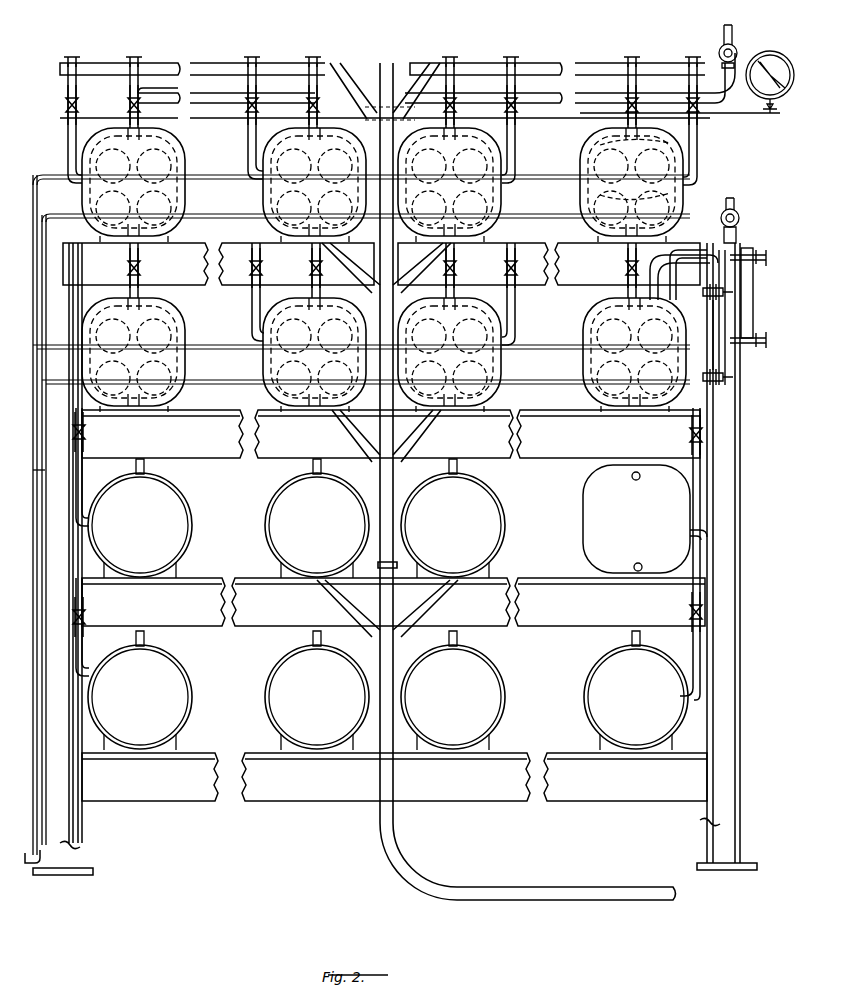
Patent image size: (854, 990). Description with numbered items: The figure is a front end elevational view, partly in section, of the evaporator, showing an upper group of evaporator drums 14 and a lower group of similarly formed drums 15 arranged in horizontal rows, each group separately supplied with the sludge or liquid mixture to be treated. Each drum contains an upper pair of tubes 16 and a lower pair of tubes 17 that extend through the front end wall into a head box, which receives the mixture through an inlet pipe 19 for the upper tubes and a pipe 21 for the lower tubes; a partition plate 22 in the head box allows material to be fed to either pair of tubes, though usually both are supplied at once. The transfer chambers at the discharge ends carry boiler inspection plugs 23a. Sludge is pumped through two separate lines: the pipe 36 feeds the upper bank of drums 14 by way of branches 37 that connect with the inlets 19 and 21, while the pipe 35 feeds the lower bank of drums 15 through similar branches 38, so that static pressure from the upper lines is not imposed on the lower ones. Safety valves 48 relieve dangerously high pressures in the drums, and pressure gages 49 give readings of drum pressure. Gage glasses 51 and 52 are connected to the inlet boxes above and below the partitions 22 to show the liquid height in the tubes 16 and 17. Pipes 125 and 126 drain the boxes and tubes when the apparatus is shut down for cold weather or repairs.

The evaporator drum 14 is at (580, 158).
The evaporator drum 15 is at (493, 499).
The upper tubes 16 is at (686, 140).
The lower tubes 17 is at (688, 187).
The inlet pipe 19 is at (133, 96).
The pipe 21 is at (68, 156).
The partition plate 22 is at (187, 176).
The boiler inspection plug 23a is at (631, 476).
The pipe 35 is at (382, 482).
The pipe 36 is at (380, 105).
The branches 37 is at (208, 65).
The branches 38 is at (220, 408).
The safety valve 48 is at (735, 44).
The pressure gage 49 is at (769, 52).
The gage glass 51 is at (758, 295).
The gage glass 52 is at (725, 350).
The drain pipe 125 is at (208, 216).
The drain pipe 126 is at (45, 470).